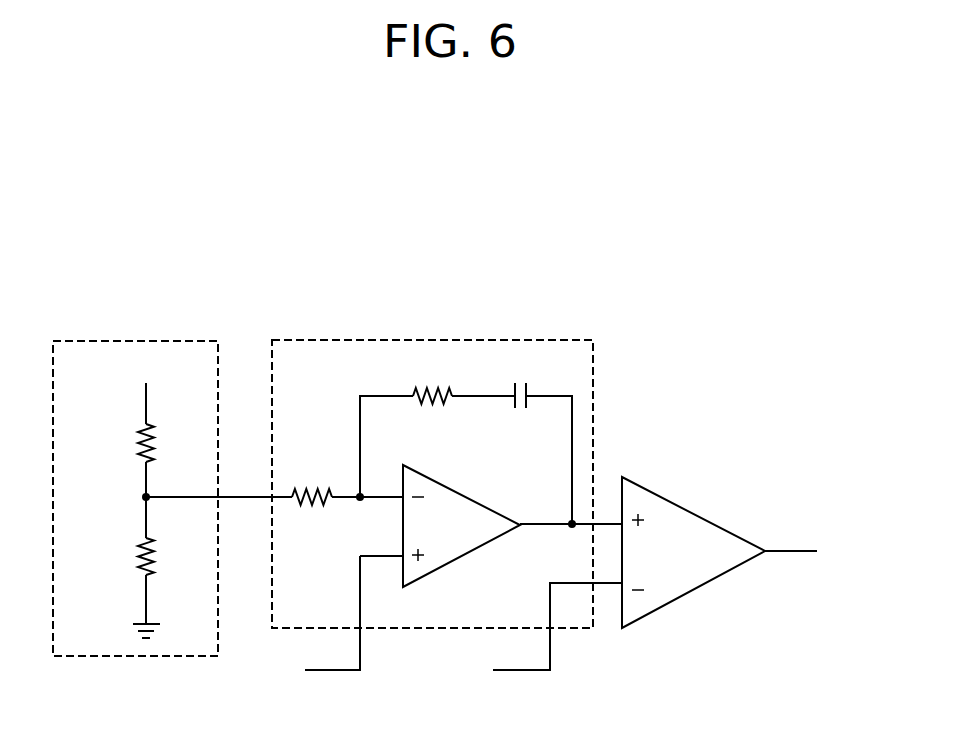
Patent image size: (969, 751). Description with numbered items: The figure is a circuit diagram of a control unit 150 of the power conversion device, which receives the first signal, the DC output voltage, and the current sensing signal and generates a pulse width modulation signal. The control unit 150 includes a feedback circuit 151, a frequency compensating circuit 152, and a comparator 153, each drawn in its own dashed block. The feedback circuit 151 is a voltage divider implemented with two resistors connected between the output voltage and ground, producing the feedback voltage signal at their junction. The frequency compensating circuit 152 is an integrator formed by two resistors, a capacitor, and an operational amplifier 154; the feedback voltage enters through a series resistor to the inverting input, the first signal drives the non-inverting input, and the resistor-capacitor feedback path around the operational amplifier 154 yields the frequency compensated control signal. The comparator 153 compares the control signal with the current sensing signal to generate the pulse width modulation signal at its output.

The control unit 150 is at (453, 205).
The feedback circuit 151 is at (135, 340).
The frequency compensating circuit 152 is at (430, 340).
The comparator 153 is at (690, 594).
The operational amplifier 154 is at (467, 557).